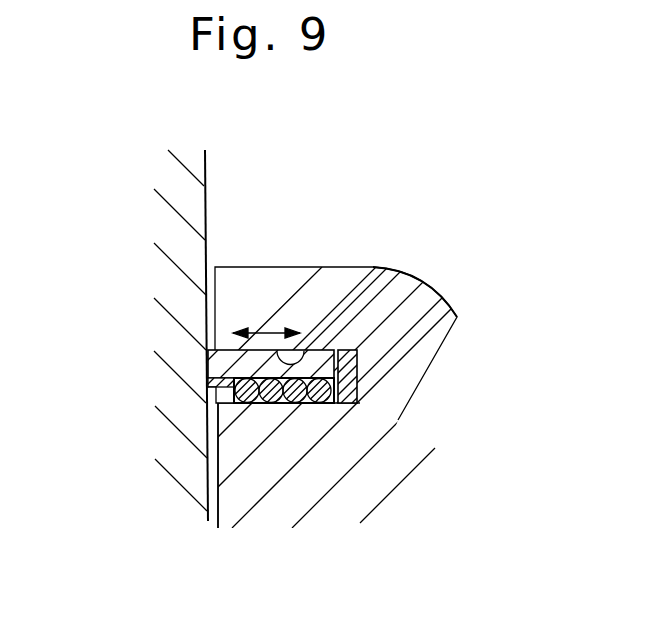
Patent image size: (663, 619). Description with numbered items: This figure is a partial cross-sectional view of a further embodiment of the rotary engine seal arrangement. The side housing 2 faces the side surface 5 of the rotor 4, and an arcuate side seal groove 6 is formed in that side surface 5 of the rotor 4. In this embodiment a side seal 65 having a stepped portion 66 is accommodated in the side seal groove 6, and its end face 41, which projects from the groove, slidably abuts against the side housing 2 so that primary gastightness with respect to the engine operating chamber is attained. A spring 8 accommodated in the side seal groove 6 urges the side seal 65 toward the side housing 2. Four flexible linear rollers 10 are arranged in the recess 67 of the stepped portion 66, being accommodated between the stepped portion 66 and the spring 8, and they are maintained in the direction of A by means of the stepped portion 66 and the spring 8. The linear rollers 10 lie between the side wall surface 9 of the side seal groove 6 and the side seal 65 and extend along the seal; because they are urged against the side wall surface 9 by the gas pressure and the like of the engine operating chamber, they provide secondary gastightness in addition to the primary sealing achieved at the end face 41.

The side housing 2 is at (183, 245).
The rotor 4 is at (310, 295).
The side surface 5 is at (212, 492).
The side seal groove 6 is at (312, 352).
The spring 8 is at (357, 384).
The side wall surface 9 is at (250, 403).
The flexible linear roller 10 is at (214, 428).
The end face 41 is at (217, 390).
The side seal 65 is at (217, 358).
The stepped portion 66 is at (211, 382).
The recess 67 is at (322, 338).
The direction A is at (277, 332).